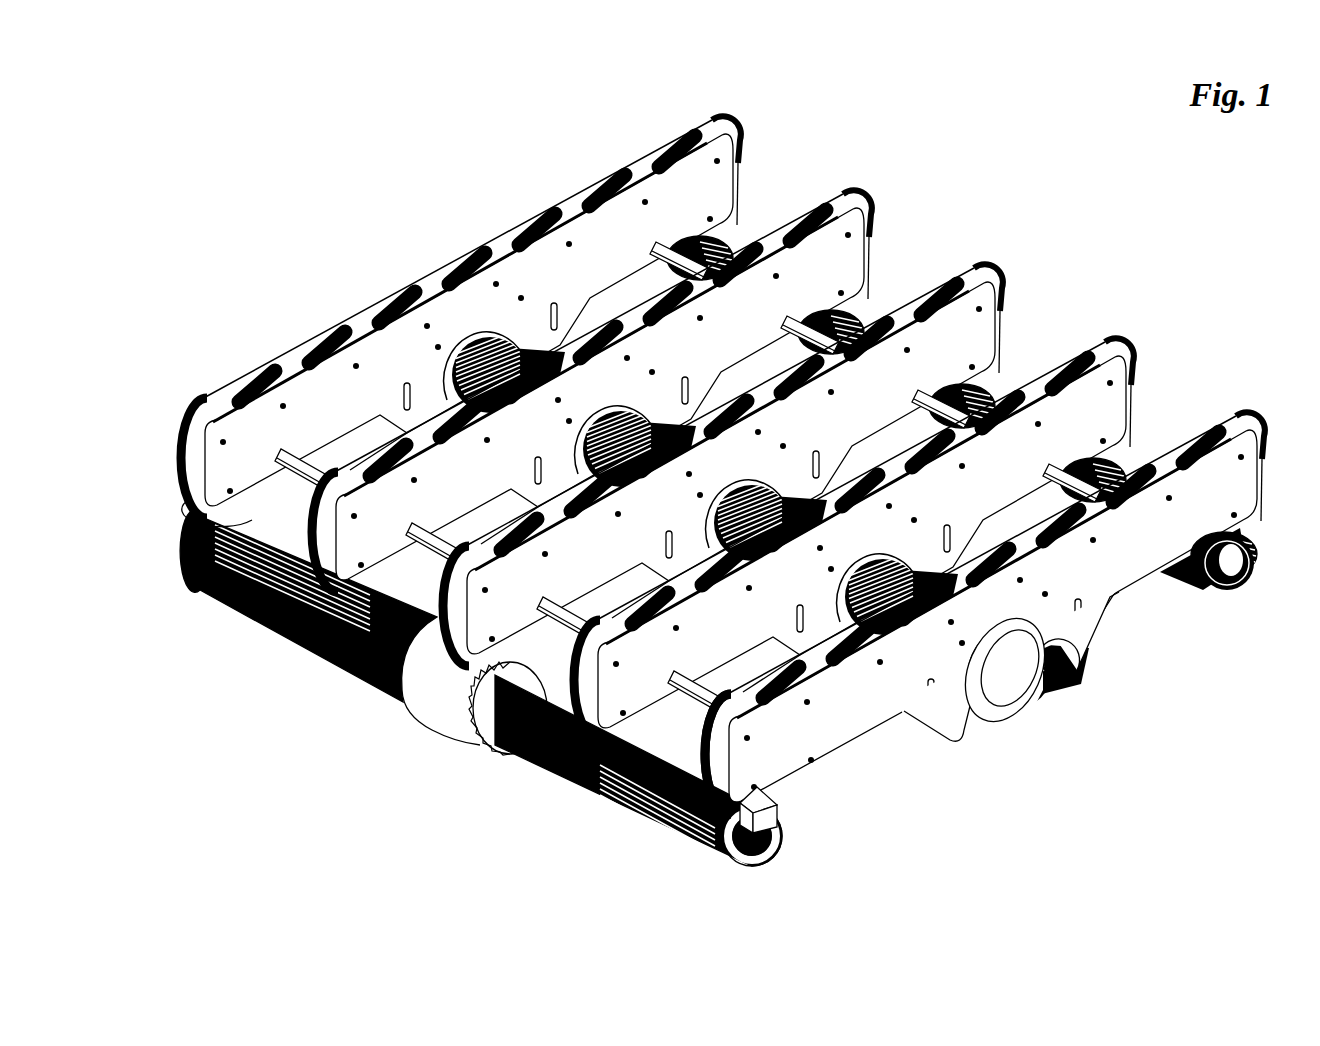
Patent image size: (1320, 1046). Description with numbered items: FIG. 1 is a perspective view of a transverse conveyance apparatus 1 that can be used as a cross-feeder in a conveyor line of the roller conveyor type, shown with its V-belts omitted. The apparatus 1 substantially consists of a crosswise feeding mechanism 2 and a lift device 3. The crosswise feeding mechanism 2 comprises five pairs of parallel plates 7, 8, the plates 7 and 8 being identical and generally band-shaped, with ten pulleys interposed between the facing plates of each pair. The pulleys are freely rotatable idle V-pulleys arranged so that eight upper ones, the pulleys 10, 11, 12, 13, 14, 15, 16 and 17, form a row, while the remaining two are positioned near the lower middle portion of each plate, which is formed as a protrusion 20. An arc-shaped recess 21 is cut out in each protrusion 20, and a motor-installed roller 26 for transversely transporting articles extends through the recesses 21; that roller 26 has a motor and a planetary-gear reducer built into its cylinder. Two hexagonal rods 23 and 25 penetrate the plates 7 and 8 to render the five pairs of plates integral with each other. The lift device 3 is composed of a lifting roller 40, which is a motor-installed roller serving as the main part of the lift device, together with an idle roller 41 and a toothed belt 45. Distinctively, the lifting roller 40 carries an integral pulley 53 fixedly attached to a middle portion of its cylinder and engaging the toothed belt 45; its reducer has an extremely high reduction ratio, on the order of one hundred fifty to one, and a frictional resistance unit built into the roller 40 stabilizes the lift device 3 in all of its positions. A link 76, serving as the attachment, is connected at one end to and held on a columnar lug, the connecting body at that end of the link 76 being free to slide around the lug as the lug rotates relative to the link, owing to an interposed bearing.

The transverse conveyance apparatus 1 is at (739, 486).
The crosswise feeding mechanism 2 is at (1090, 298).
The lift device 3 is at (470, 682).
The plate 7 is at (300, 342).
The plate 8 is at (383, 350).
The pulley 10 is at (205, 392).
The pulley 11 is at (260, 362).
The pulley 12 is at (343, 324).
The pulley 13 is at (416, 264).
The pulley 14 is at (478, 237).
The pulley 15 is at (548, 210).
The pulley 16 is at (611, 174).
The pulley 17 is at (706, 120).
The protrusion 20 is at (1041, 671).
The arc-shaped recess 21 is at (1062, 668).
The hexagonal rod 23 is at (704, 702).
The hexagonal rod 25 is at (1138, 462).
The motor-installed roller 26 is at (1018, 686).
The lifting roller 40 is at (318, 630).
The idle roller 41 is at (878, 302).
The toothed belt 45 is at (516, 757).
The pulley 53 is at (481, 755).
The link 76 is at (1256, 527).